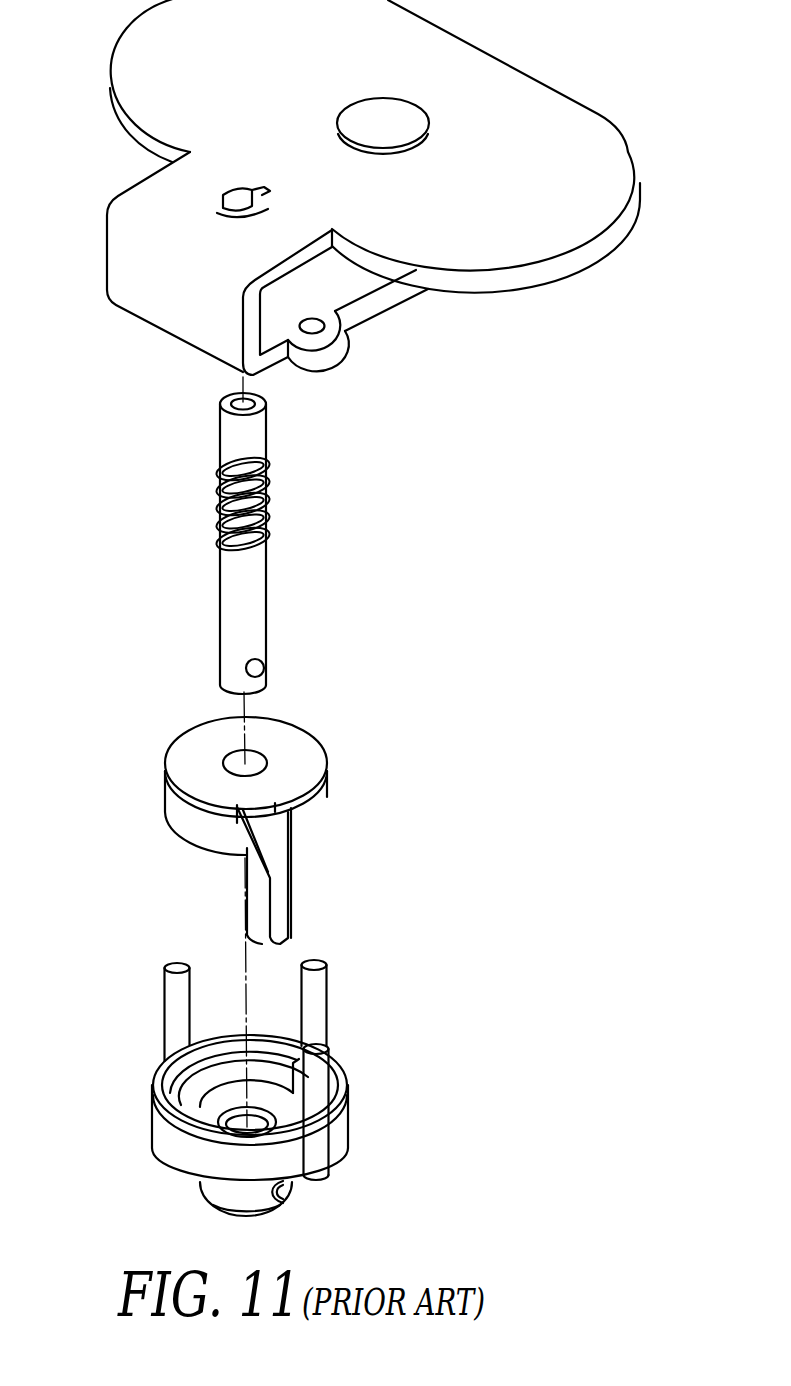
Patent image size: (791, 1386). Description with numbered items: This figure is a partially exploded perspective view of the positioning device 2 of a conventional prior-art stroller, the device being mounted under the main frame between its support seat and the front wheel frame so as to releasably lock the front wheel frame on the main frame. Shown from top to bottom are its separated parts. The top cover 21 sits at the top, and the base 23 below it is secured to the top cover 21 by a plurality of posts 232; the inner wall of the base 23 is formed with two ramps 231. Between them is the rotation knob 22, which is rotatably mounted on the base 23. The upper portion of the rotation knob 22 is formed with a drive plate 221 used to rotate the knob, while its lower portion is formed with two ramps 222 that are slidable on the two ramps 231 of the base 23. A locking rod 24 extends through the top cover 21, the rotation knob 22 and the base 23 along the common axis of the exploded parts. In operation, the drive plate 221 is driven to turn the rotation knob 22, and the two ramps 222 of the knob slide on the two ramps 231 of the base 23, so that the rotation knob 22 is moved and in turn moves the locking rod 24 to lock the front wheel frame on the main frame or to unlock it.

The positioning device 2 is at (355, 608).
The top cover 21 is at (530, 193).
The rotation knob 22 is at (274, 830).
The drive plate 221 is at (287, 900).
The ramps 222 is at (202, 825).
The base 23 is at (257, 1088).
The ramps 231 is at (228, 1072).
The posts 232 is at (317, 1000).
The locking rod 24 is at (242, 615).